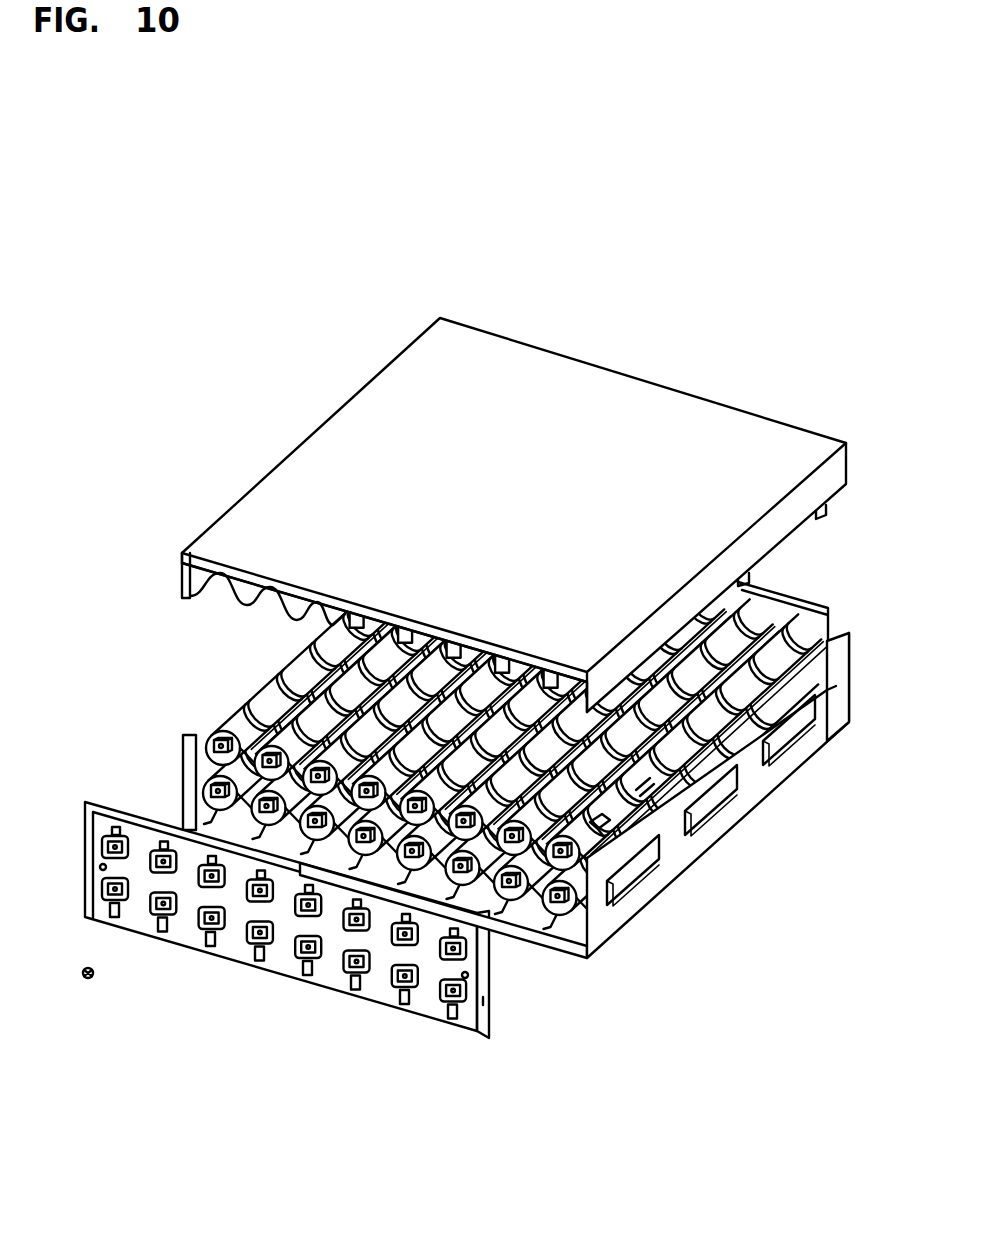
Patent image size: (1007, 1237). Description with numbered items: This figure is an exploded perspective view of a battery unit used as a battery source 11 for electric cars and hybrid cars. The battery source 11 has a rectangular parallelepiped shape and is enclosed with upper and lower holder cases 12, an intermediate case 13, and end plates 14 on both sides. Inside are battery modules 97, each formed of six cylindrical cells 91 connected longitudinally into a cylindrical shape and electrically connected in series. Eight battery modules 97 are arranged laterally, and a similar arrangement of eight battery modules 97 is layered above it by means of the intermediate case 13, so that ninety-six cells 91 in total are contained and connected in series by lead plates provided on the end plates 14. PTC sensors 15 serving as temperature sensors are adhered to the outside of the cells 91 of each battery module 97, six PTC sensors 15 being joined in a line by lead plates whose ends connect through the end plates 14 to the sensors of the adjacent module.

The battery source 11 is at (142, 629).
The holder case 12 is at (320, 452).
The intermediate case 13 is at (838, 662).
The end plate 14 is at (792, 594).
The PTC sensor 15 is at (233, 707).
The cell 91 is at (600, 832).
The battery module 97 is at (636, 792).